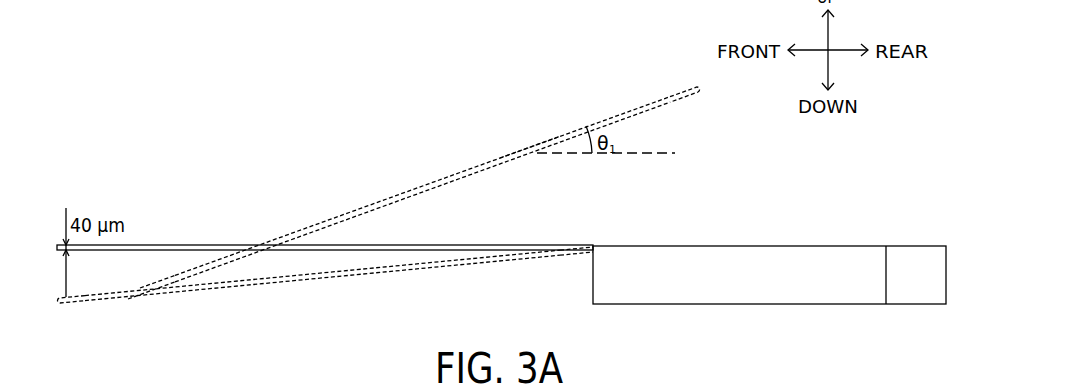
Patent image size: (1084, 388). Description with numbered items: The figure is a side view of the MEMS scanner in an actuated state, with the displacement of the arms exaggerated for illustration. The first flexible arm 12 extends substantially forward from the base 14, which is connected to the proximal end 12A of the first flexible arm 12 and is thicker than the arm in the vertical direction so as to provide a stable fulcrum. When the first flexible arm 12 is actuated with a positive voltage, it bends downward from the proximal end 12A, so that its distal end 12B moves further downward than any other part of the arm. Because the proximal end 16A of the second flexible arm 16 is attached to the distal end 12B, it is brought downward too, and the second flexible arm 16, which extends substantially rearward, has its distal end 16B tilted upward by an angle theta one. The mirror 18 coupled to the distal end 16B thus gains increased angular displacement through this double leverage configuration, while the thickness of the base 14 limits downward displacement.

The first flexible arm 12 is at (334, 297).
The proximal end of the first flexible arm 12A is at (560, 256).
The distal end of the first flexible arm 12B is at (84, 304).
The base 14 is at (825, 245).
The second flexible arm 16 is at (377, 160).
The proximal end of the second flexible arm 16A is at (168, 279).
The distal end of the second flexible arm 16B is at (681, 93).
The mirror 18 is at (526, 132).